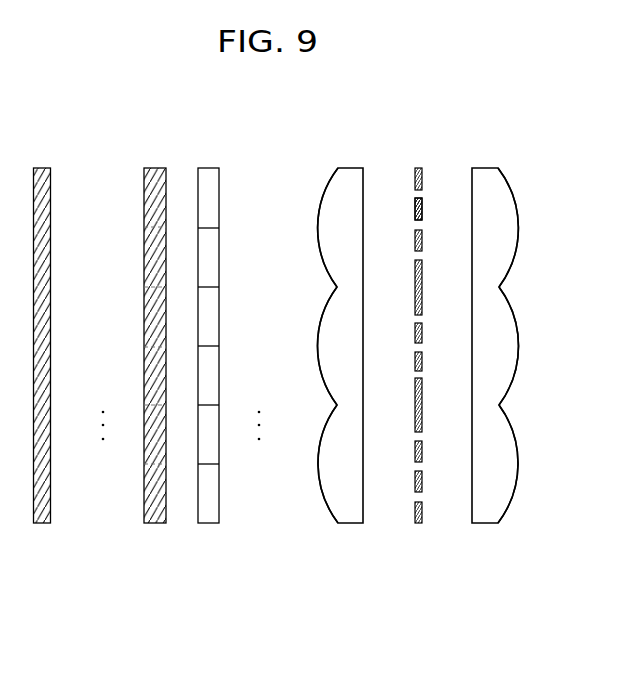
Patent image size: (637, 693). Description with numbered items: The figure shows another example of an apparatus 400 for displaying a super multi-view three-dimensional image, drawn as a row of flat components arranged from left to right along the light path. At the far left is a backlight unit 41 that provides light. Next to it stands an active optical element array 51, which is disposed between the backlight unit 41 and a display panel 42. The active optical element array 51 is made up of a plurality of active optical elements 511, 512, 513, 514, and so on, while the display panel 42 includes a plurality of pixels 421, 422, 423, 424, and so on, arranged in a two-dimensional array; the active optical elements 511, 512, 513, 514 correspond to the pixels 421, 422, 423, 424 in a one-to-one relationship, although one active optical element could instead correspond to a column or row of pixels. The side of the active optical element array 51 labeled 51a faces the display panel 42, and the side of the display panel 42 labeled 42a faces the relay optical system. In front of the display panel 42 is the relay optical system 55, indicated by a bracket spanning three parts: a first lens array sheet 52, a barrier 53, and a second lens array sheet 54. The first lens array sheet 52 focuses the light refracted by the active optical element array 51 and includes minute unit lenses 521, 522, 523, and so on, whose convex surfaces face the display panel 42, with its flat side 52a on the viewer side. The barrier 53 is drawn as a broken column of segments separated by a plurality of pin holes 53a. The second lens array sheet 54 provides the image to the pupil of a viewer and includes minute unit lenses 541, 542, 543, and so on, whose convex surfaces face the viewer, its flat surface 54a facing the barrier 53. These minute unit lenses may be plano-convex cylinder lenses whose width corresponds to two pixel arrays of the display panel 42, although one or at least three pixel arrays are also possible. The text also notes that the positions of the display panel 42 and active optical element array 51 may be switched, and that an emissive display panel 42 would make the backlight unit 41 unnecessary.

The backlight unit 41 is at (44, 168).
The active optical element array 51 is at (157, 168).
The active optical element 511 is at (144, 200).
The active optical element 512 is at (144, 259).
The active optical element 513 is at (144, 319).
The active optical element 514 is at (144, 377).
The light incident surface of liquid crystal layer 51a is at (143, 493).
The display panel 42 is at (208, 168).
The pixel 421 is at (219, 200).
The pixel 422 is at (219, 257).
The pixel 423 is at (219, 317).
The pixel 424 is at (219, 377).
The light exit surface of pixel electrode array 42a is at (198, 507).
The first lens array sheet 52 is at (352, 168).
The minute unit lens 521 is at (319, 228).
The minute unit lens 522 is at (319, 345).
The minute unit lens 523 is at (319, 465).
The light incident surface of first lens array 52a is at (323, 498).
The barrier 53 is at (418, 168).
The pin hole 53a is at (422, 197).
The second lens array sheet 54 is at (488, 168).
The minute unit lens 541 is at (517, 227).
The minute unit lens 542 is at (517, 346).
The minute unit lens 543 is at (517, 464).
The light exit surface of second lens array 54a is at (516, 500).
The relay optical system 55 is at (492, 117).
The apparatus 400 is at (182, 627).